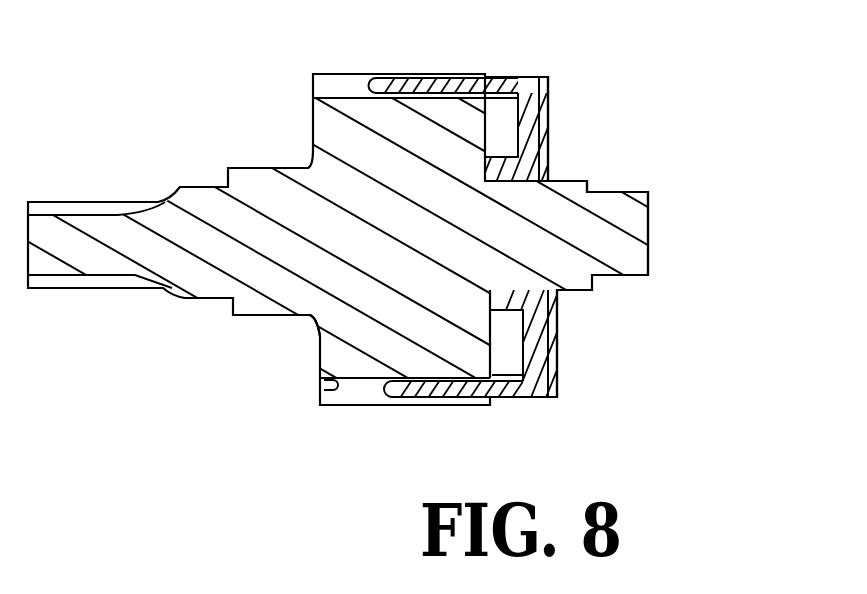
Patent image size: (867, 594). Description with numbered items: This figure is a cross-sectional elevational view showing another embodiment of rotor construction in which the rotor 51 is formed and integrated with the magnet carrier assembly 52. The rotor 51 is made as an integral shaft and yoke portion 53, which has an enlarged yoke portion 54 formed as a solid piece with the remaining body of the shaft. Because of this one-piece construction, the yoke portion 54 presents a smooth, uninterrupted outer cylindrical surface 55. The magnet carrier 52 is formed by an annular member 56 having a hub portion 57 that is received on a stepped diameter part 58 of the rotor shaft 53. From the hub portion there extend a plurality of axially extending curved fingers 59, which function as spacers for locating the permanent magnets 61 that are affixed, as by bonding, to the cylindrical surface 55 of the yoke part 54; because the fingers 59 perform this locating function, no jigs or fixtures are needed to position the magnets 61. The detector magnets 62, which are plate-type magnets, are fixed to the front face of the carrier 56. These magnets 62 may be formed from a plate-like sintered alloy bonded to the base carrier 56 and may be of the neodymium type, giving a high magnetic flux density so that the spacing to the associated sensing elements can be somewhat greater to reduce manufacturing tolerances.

The rotor 51 is at (140, 345).
The magnet carrier assembly 52 is at (607, 209).
The shaft and yoke portion 53 is at (650, 220).
The yoke portion 54 is at (320, 336).
The outer cylindrical surface 55 is at (327, 385).
The annular member 56 is at (527, 77).
The hub portion 57 is at (545, 162).
The stepped diameter part 58 is at (560, 290).
The axially extending curved fingers 59 is at (374, 77).
The permanent magnets 61 is at (333, 74).
The detector magnets 62 is at (548, 100).